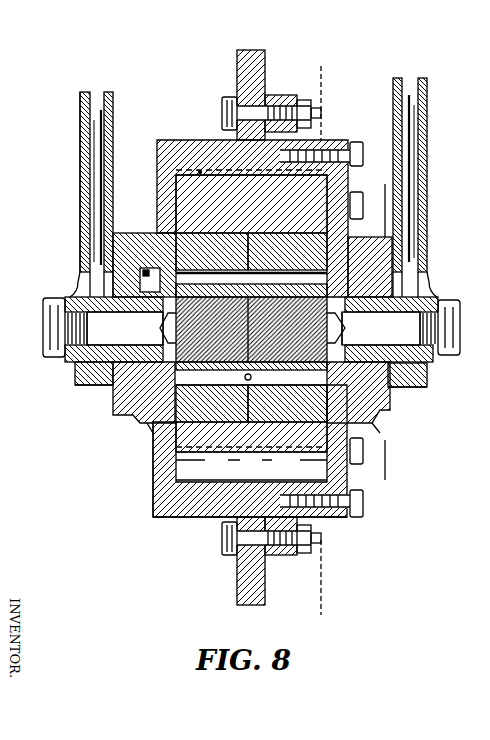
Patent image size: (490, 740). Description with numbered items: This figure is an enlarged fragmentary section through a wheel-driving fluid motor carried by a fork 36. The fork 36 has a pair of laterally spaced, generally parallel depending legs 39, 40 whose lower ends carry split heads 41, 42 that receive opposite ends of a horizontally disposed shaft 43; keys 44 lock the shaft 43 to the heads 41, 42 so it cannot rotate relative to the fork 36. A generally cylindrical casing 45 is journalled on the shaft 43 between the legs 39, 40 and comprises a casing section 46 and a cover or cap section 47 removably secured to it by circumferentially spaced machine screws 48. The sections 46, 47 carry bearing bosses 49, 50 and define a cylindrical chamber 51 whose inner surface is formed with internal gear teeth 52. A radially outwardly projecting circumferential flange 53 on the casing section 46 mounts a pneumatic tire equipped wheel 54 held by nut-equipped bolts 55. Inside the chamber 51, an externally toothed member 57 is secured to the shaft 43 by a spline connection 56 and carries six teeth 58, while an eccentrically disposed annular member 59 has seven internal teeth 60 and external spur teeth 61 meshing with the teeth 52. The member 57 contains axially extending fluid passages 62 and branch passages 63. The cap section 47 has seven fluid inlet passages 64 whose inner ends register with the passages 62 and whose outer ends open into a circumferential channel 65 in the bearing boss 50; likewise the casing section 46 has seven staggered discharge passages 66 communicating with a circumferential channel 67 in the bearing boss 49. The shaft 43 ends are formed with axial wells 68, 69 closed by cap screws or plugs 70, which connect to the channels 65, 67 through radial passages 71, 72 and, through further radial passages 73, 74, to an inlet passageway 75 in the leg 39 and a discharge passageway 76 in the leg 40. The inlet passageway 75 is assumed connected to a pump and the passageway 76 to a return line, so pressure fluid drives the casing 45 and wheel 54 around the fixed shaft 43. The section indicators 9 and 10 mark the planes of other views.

The fork 36 is at (78, 121).
The leg 39 is at (428, 138).
The leg 40 is at (80, 147).
The split head 41 is at (419, 389).
The split head 42 is at (90, 386).
The shaft 43 is at (290, 336).
The key 44 is at (76, 375).
The casing 45 is at (152, 470).
The casing section 46 is at (166, 447).
The cover or cap section 47 is at (347, 518).
The machine screws 48 is at (357, 143).
The bearing boss 49 is at (115, 417).
The bearing boss 50 is at (385, 428).
The cylindrical chamber 51 is at (251, 463).
The internal gear teeth 52 is at (160, 481).
The circumferential flange 53 is at (277, 98).
The wheel 54 is at (240, 70).
The nut-equipped bolts 55 is at (224, 112).
The spline connection 56 is at (214, 386).
The externally toothed member 57 is at (176, 237).
The teeth 58 is at (258, 232).
The annular member 59 is at (186, 193).
The internal teeth 60 is at (212, 251).
The external spur teeth 61 is at (200, 172).
The fluid passages 62 is at (295, 273).
The branch passages 63 is at (243, 378).
The fluid inlet passages 64 is at (340, 392).
The circumferential channel 65 is at (366, 292).
The discharge passages 66 is at (158, 278).
The circumferential channel 67 is at (118, 392).
The axial recess or well 68 is at (395, 336).
The axial recess or well 69 is at (120, 336).
The cap screws or plugs 70 is at (50, 325).
The radial passage 71 is at (346, 328).
The radial passage 72 is at (145, 328).
The radial passage 73 is at (425, 297).
The radial passage 74 is at (80, 292).
The inlet passageway 75 is at (410, 172).
The discharge passageway 76 is at (101, 178).
The section line 9- 9 is at (362, 81).
The section line 10- 10 is at (385, 184).